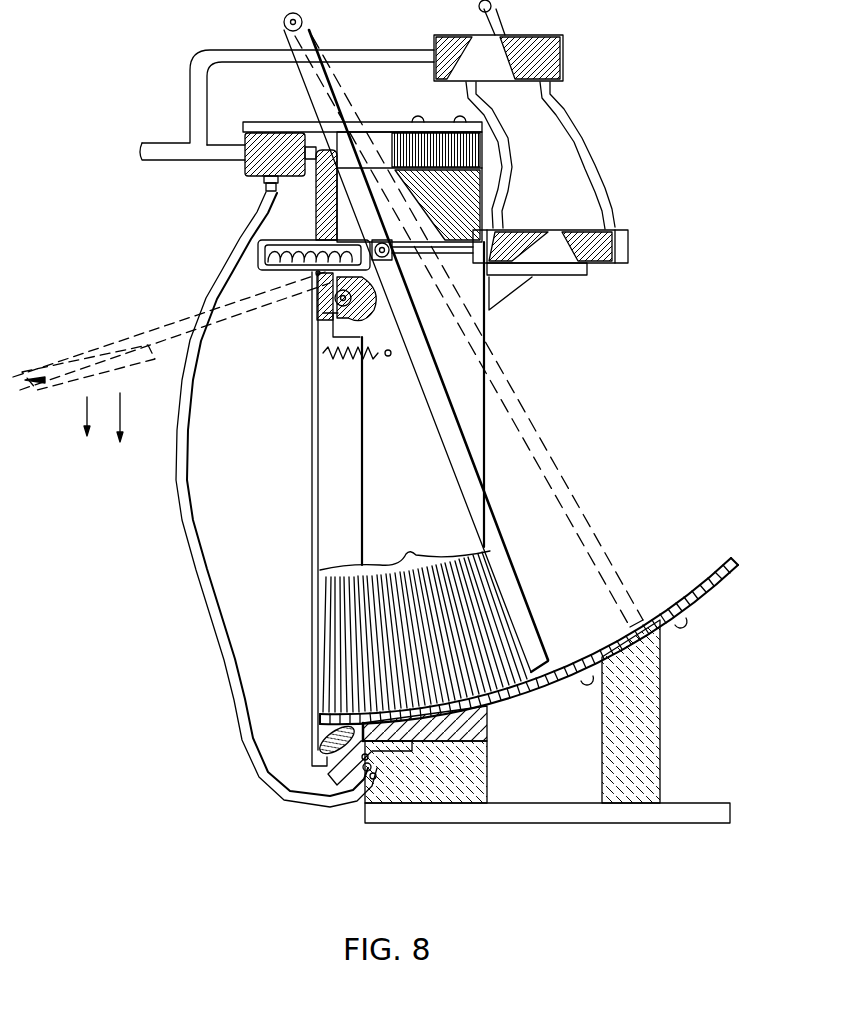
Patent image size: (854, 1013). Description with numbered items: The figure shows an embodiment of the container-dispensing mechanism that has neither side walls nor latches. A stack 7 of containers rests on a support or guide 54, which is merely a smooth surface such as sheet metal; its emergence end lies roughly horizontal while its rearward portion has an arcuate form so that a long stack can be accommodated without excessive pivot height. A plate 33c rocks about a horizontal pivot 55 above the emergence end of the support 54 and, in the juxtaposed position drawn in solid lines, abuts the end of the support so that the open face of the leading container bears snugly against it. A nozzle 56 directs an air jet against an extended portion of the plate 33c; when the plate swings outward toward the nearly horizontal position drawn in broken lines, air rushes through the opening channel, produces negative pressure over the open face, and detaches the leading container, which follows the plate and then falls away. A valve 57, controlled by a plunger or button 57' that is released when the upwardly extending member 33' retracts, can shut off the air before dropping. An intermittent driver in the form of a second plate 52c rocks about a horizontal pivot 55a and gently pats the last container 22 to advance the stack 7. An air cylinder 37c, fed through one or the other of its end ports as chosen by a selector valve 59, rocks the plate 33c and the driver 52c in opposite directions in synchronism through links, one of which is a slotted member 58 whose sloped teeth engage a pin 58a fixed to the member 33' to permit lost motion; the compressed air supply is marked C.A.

The stack 7 is at (407, 555).
The last container 22 is at (513, 640).
The upwardly extending member 33' is at (310, 195).
The plate 33c is at (107, 344).
The air cylinder 37c is at (551, 246).
The second plate (intermittent driver) 52c is at (530, 422).
The support or guide 54 is at (533, 700).
The horizontal pivot 55 is at (349, 304).
The horizontal pivot 55a is at (302, 25).
The nozzle 56 is at (333, 749).
The valve 57 is at (253, 163).
The plunger or button 57' is at (285, 123).
The slotted member 58 is at (258, 266).
The pin 58a is at (316, 276).
The selector valve 59 is at (497, 68).
The compressed air inlet C.A. is at (130, 152).